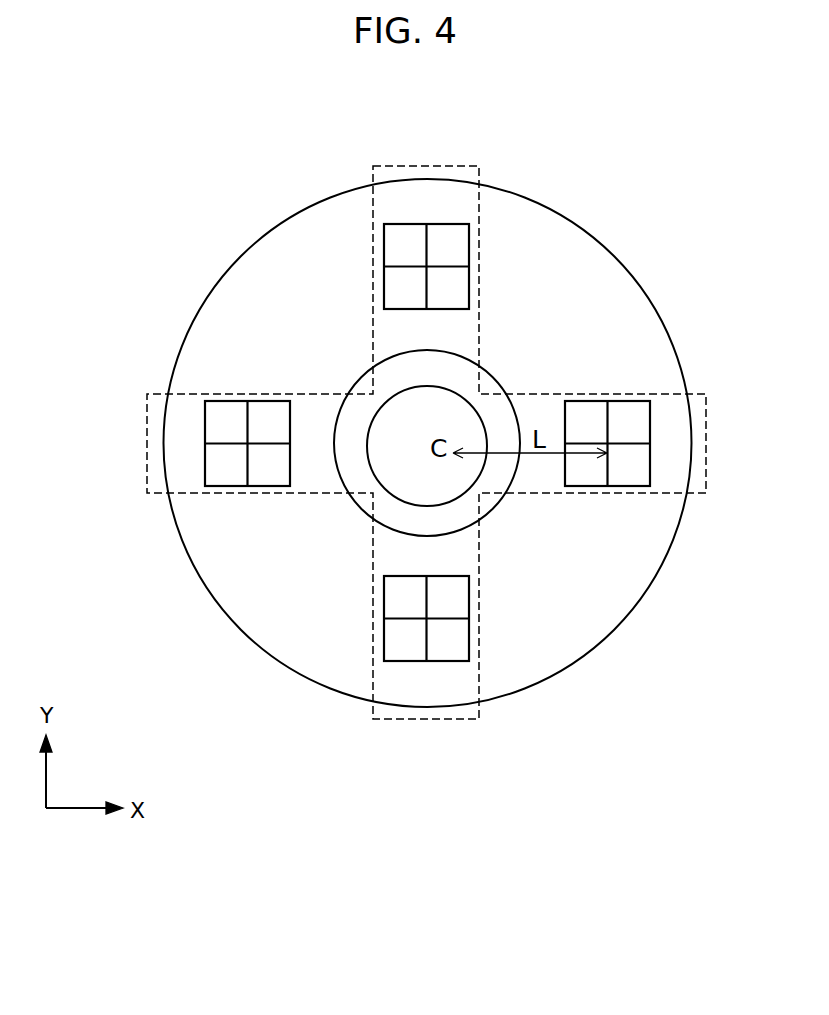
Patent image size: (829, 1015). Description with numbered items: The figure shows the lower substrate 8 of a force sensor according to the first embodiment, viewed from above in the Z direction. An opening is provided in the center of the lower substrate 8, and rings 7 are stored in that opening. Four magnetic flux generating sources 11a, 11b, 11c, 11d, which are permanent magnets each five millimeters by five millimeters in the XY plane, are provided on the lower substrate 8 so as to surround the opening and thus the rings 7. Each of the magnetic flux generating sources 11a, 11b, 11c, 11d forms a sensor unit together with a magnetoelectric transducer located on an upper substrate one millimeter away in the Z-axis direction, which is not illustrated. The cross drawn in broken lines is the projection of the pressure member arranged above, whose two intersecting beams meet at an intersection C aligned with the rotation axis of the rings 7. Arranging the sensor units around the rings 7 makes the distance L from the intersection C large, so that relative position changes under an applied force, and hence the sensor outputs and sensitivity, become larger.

The rings 7 is at (458, 425).
The lower substrate 8 is at (273, 596).
The magnetic flux generating source 11a is at (228, 457).
The magnetic flux generating source 11b is at (463, 280).
The magnetic flux generating source 11c is at (620, 410).
The magnetic flux generating source 11d is at (453, 635).